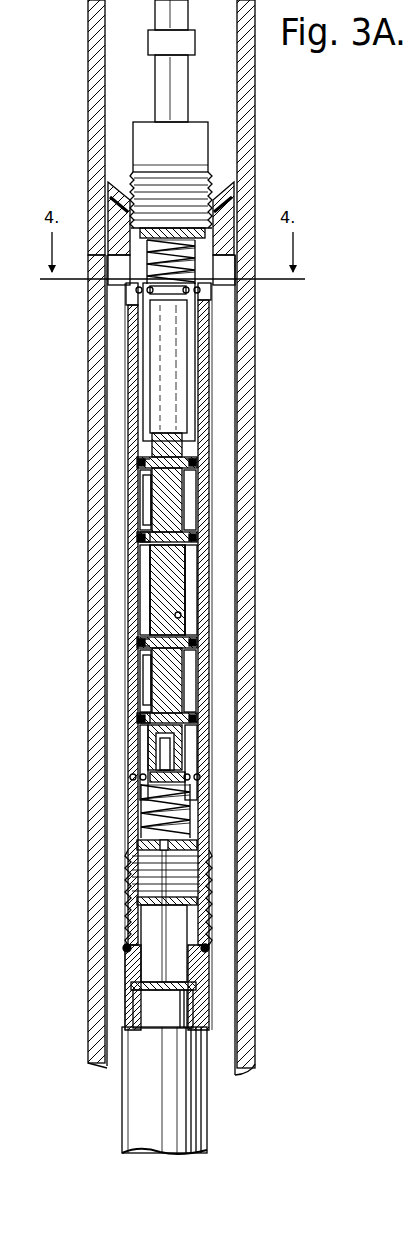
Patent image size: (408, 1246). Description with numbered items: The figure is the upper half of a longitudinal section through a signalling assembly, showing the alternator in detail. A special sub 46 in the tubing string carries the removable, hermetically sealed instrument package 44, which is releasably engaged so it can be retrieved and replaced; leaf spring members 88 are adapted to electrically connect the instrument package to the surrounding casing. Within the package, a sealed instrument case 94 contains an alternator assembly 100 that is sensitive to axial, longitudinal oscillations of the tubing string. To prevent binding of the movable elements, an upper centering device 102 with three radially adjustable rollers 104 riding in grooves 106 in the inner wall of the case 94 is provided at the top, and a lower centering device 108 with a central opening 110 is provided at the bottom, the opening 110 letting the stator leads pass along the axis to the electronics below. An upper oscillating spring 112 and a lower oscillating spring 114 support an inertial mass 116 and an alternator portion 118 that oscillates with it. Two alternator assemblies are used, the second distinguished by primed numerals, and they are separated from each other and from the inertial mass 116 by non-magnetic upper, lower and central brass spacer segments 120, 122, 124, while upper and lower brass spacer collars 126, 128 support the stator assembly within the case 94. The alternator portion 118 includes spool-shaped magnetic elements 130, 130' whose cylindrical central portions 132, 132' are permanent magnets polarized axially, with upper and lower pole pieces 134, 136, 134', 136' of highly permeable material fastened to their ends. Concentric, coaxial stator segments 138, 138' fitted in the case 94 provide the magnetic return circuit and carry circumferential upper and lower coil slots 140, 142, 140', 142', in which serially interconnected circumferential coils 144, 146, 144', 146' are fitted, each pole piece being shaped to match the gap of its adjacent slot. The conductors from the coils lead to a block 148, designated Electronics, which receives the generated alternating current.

The instrument package 44 is at (212, 182).
The sub 46 is at (247, 443).
The leaf spring members 88 is at (398, 736).
The instrument case 94 is at (212, 418).
The alternator assembly 100 is at (197, 386).
The upper centering device 102 is at (186, 308).
The radially adjustable rollers 104 is at (200, 292).
The grooves 106 is at (197, 267).
The lower centering device 108 is at (190, 778).
The central opening 110 is at (173, 768).
The upper oscillating spring 112 is at (195, 237).
The lower oscillating spring 114 is at (197, 817).
The inertial mass 116 is at (160, 375).
The alternator portion 118 is at (147, 578).
The upper brass spacer segment 120 is at (150, 442).
The lower brass spacer segment 122 is at (178, 750).
The central brass spacer segment 124 is at (180, 592).
The upper brass spacer collar 126 is at (181, 615).
The lower brass spacer collar 128 is at (203, 845).
The spool-shaped magnetic element 130 is at (223, 500).
The cylindrical central portion 132 is at (239, 503).
The upper pole piece 134 is at (240, 469).
The lower pole piece 136 is at (215, 548).
The stator segment 138 is at (97, 500).
The upper coil slot 140 is at (94, 470).
The lower coil slot 142 is at (95, 512).
The circumferential coil 144 is at (116, 476).
The circumferential coil 146 is at (94, 553).
The spool-shaped magnetic element 130' is at (225, 680).
The cylindrical central portion 132' is at (237, 681).
The upper pole piece 134' is at (217, 640).
The lower pole piece 136' is at (217, 721).
The stator segment 138' is at (94, 681).
The upper coil slot 140' is at (93, 625).
The lower coil slot 142' is at (94, 682).
The circumferential coil 144' is at (93, 645).
The circumferential coil 146' is at (93, 724).
The block 148 is at (192, 1003).
The element Electronics is at (192, 1015).